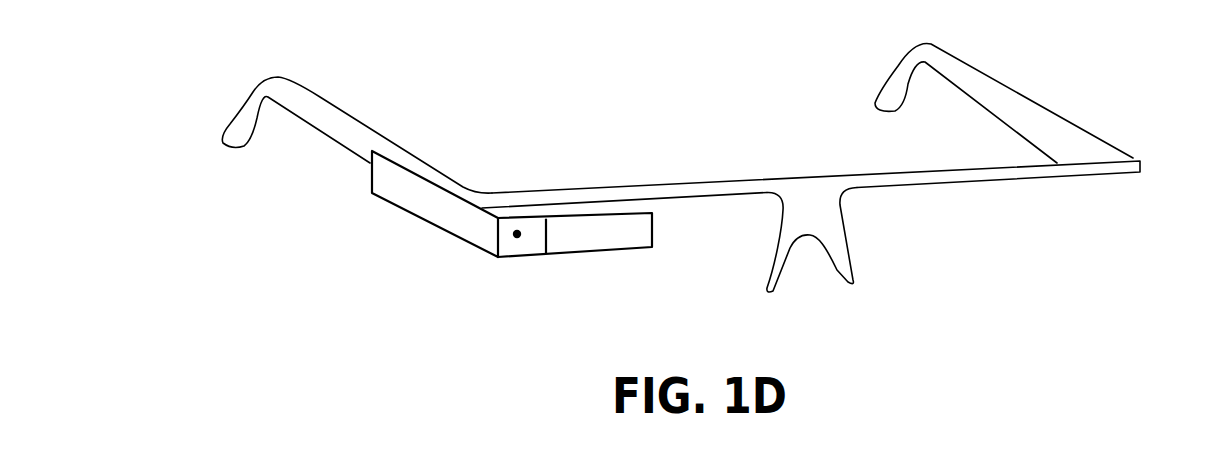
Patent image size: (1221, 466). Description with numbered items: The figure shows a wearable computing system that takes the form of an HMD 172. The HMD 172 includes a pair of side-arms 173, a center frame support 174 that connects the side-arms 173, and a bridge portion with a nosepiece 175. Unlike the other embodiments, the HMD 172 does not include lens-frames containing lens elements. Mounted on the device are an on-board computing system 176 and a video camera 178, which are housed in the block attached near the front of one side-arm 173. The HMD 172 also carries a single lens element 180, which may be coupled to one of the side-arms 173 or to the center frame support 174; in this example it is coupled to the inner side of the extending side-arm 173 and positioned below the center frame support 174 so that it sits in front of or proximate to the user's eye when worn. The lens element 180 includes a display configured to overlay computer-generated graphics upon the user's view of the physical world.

The HMD 172 is at (717, 170).
The side-arms 173 is at (330, 122).
The center frame support 174 is at (700, 188).
The nosepiece 175 is at (835, 230).
The on-board computing system 176 is at (411, 215).
The video camera 178 is at (514, 238).
The single lens element 180 is at (603, 252).